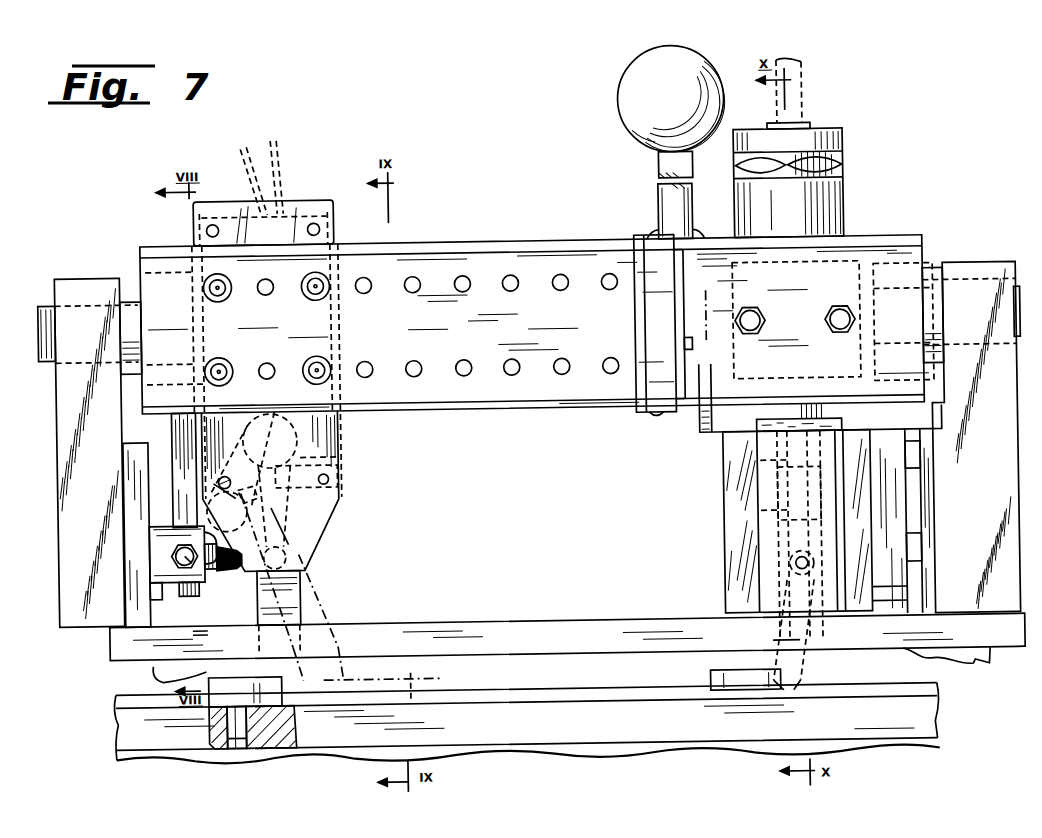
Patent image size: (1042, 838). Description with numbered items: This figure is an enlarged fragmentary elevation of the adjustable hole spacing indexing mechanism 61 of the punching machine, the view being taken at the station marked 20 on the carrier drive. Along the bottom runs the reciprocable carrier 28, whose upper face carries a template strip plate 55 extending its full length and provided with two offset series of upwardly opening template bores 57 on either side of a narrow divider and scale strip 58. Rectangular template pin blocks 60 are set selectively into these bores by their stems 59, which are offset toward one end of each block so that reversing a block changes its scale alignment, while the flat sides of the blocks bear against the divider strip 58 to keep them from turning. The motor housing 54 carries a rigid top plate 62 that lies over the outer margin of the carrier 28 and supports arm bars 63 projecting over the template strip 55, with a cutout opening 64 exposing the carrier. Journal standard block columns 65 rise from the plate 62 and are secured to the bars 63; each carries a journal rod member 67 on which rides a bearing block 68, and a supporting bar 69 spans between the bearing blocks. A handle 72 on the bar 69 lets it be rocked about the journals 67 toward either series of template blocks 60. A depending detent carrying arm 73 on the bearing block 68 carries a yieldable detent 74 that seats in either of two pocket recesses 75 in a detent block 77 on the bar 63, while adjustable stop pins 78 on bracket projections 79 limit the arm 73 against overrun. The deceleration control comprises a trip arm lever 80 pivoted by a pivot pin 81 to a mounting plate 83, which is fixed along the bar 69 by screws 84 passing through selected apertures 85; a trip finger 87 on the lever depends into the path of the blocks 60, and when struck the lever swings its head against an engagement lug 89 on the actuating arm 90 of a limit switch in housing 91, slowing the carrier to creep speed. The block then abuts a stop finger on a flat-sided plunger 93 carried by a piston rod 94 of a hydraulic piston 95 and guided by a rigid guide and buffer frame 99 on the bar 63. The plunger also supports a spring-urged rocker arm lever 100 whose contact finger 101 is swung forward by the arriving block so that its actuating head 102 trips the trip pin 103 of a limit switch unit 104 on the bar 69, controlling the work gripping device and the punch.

The clamp 20 is at (220, 192).
The carrier 28 is at (118, 760).
The housing 54 is at (150, 677).
The template strip plate 55 is at (937, 732).
The template bores 57 is at (235, 752).
The divider and scale strip 58 is at (497, 703).
The stems 59 is at (207, 752).
The template pin blocks 60 is at (237, 687).
The indexing mechanism 61 is at (493, 152).
The top plate 62 is at (120, 640).
The supporting arm bars 63 is at (120, 612).
The cutout opening 64 is at (195, 639).
The journal standard block columns 65 is at (72, 448).
The journal pin or rod member 67 is at (42, 342).
The bearing block 68 is at (140, 277).
The supporting bar 69 is at (532, 269).
The handle 72 is at (662, 166).
The detent carrying arm 73 is at (174, 434).
The detent 74 is at (172, 553).
The detent receiving pocket recesses 75 is at (856, 214).
The detent bearing plate or block 77 is at (150, 598).
The adjustable stop pins 78 is at (203, 577).
The bracket projections 79 is at (187, 597).
The trip arm lever 80 is at (313, 607).
The pivot pin 81 is at (305, 550).
The mounting plate 83 is at (345, 503).
The screws 84 is at (317, 305).
The apertures 85 is at (413, 299).
The trip finger 87 is at (283, 682).
The engagement lug 89 is at (230, 483).
The actuating arm 90 is at (340, 475).
The housing 91 is at (339, 453).
The plunger 93 is at (840, 439).
The piston rod 94 is at (787, 420).
The hydraulic piston 95 is at (847, 198).
The guide and buffer frame 99 is at (723, 502).
The rocker arm lever 100 is at (777, 518).
The contact finger 101 is at (773, 639).
The actuating head 102 is at (700, 333).
The trip pin 103 is at (688, 366).
The limit switch unit 104 is at (637, 330).